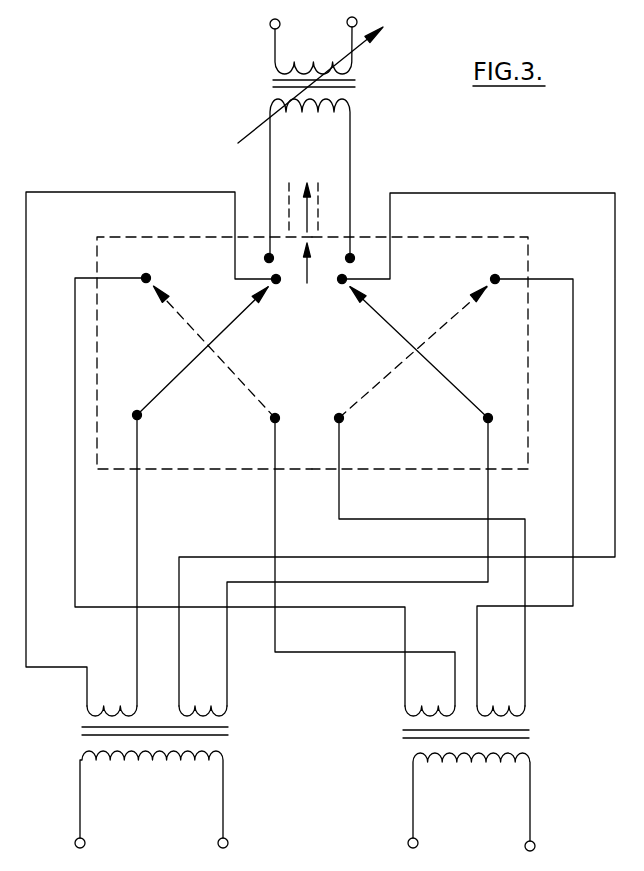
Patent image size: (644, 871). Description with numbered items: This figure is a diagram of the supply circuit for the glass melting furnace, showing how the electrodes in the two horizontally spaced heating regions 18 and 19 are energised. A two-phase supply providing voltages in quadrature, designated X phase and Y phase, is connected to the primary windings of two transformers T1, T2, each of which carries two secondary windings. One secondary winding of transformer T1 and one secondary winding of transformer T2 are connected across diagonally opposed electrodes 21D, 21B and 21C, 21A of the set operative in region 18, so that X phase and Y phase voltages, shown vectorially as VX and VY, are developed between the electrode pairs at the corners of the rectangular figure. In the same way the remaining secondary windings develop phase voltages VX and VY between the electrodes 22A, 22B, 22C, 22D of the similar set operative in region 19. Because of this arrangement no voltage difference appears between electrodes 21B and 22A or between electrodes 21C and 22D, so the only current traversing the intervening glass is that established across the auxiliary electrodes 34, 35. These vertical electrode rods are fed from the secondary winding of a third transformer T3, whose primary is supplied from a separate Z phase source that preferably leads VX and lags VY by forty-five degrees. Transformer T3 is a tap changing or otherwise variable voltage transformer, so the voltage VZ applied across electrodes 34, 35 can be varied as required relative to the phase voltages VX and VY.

The heating region 18 is at (196, 263).
The heating region 19 is at (448, 240).
The auxiliary electrode 34 is at (266, 257).
The auxiliary electrode 35 is at (353, 257).
The electrode 21A is at (240, 476).
The electrode 21B is at (166, 449).
The electrode 21C is at (342, 559).
The electrode 21D is at (163, 559).
The electrode 22A is at (397, 449).
The electrode 22B is at (525, 476).
The electrode 22C is at (360, 560).
The electrode 22D is at (430, 560).
The transformer T1 is at (129, 777).
The transformer T2 is at (442, 778).
The third transformer T3 is at (302, 137).
The X phase voltage VX is at (312, 352).
The Y phase voltage VY is at (310, 352).
The Z phase voltage VZ is at (313, 233).